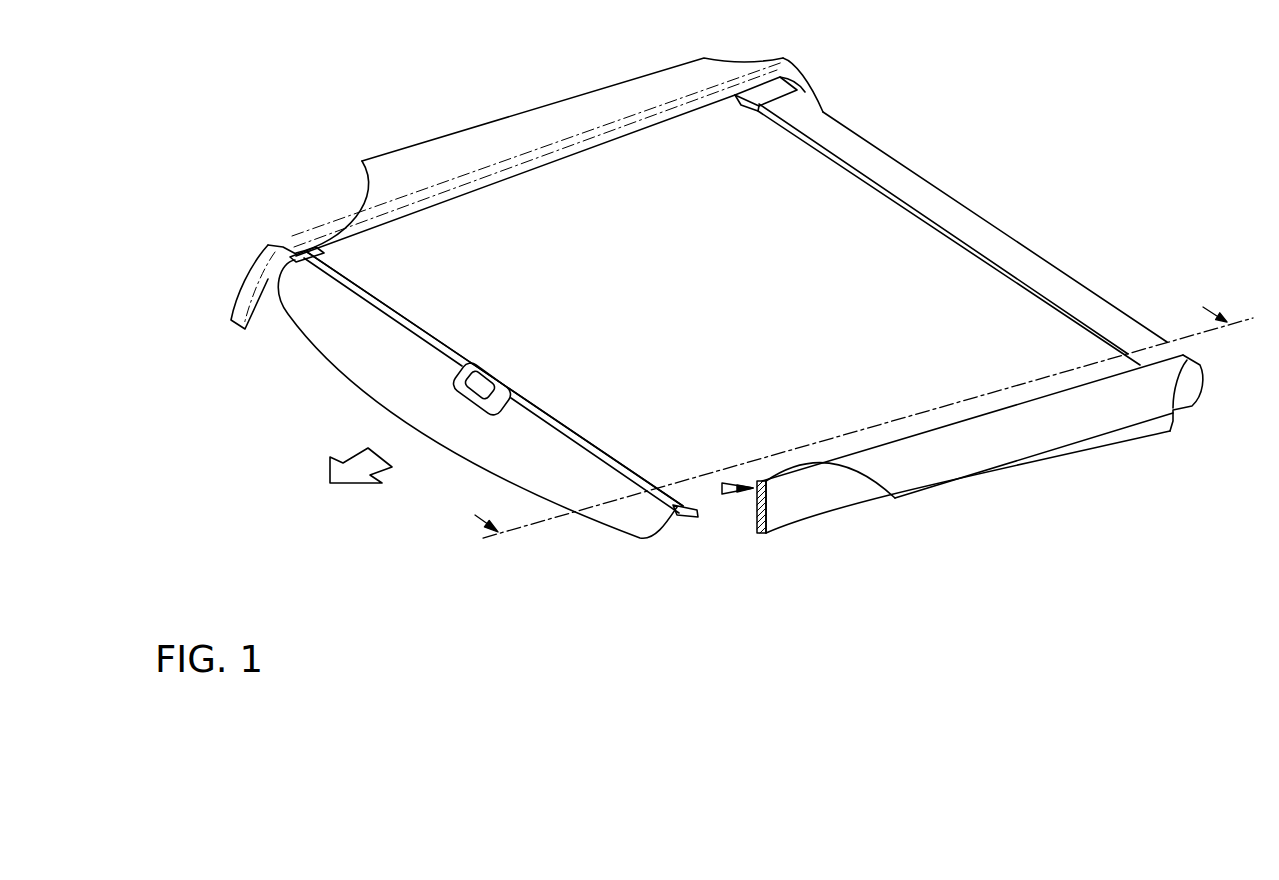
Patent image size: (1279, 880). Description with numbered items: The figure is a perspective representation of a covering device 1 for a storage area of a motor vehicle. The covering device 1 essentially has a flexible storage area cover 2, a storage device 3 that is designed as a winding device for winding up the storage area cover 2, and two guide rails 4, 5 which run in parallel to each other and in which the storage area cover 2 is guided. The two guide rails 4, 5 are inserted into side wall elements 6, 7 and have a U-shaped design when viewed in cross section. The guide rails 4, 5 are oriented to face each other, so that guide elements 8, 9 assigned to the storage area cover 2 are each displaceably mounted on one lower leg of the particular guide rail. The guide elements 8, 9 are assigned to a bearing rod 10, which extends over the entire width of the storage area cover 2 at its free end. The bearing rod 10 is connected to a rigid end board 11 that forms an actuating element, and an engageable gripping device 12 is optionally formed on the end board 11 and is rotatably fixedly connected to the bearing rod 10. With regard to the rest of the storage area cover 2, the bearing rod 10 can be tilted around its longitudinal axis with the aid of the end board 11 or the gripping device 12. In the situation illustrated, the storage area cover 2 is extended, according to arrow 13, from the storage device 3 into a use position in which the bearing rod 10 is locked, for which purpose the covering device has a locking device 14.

The covering device 1 is at (316, 137).
The storage area cover 2 is at (860, 210).
The storage device 3 is at (1187, 397).
The guide rail 4 is at (796, 80).
The guide rail 5 is at (724, 495).
The side wall element 6 is at (553, 112).
The side wall element 7 is at (938, 472).
The guide element 8 is at (307, 252).
The guide element 9 is at (686, 508).
The bearing rod 10 is at (364, 293).
The end board 11 is at (479, 446).
The gripping device 12 is at (458, 393).
The arrow 13 is at (350, 473).
The locking device 14 is at (280, 232).